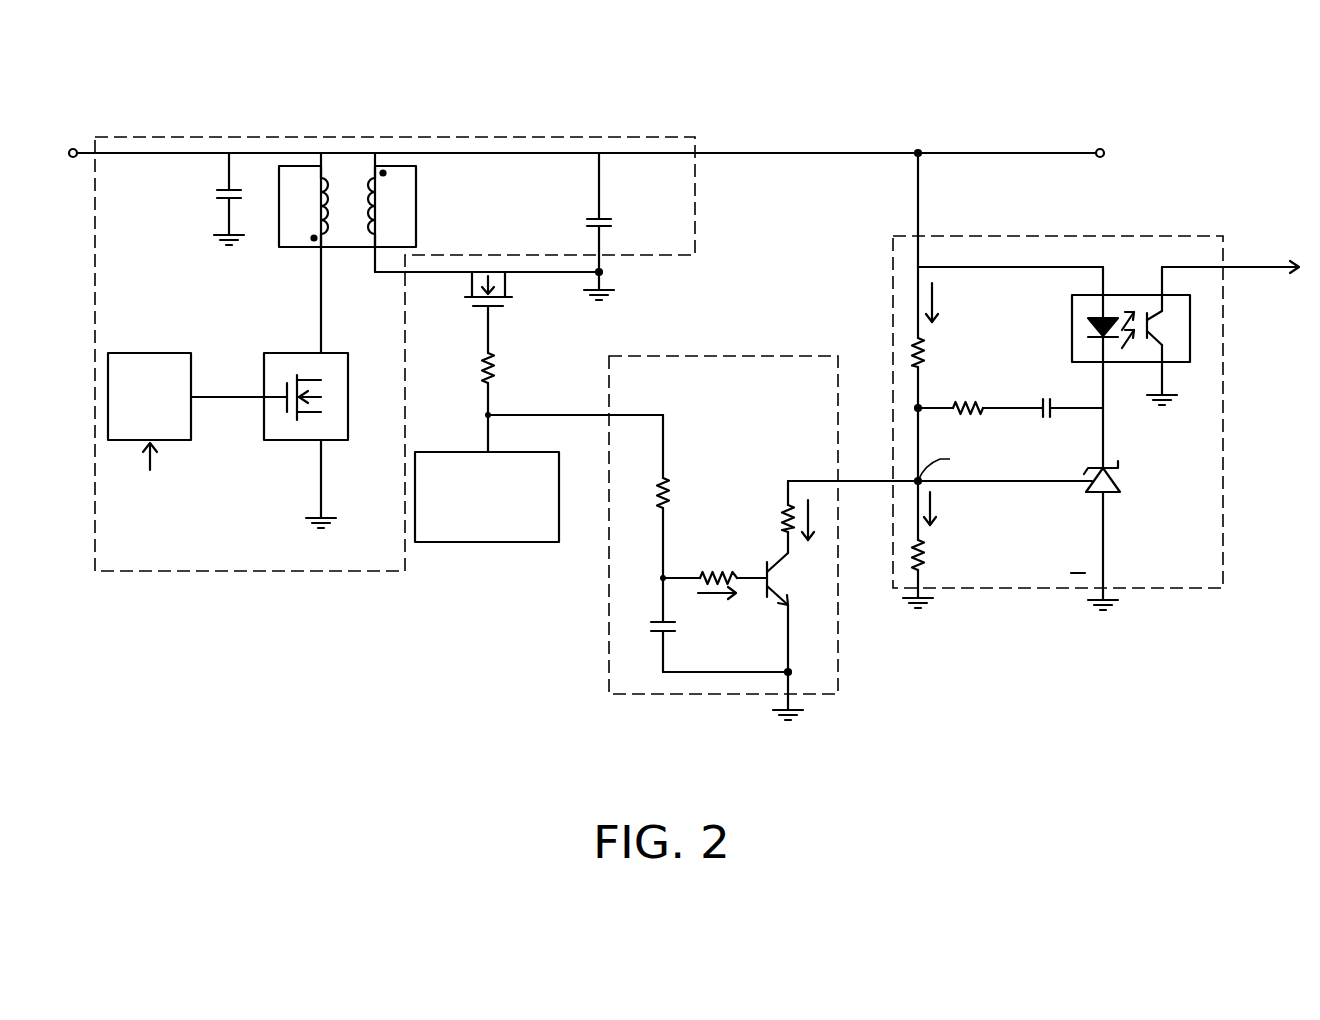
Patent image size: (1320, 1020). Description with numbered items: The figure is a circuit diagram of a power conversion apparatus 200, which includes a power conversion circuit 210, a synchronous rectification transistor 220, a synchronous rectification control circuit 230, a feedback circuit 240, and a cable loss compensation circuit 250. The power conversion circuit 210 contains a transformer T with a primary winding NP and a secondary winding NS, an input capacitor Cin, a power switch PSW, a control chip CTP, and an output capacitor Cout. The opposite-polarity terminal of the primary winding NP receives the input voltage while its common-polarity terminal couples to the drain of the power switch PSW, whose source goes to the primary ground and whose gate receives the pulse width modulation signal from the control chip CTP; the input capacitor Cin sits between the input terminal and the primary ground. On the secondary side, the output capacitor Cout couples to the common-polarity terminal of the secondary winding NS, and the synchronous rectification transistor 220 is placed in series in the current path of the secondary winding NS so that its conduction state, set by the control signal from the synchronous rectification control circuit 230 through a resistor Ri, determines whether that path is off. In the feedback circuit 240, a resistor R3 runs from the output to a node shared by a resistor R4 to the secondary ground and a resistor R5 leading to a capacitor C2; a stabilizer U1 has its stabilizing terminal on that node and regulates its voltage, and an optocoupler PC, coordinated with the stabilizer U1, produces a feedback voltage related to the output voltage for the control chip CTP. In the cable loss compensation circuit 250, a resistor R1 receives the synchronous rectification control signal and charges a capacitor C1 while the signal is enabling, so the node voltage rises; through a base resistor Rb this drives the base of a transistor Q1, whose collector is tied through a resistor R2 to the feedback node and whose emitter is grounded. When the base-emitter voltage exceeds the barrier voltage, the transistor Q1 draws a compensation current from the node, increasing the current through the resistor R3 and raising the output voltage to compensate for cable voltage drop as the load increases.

The power conversion apparatus 200 is at (689, 434).
The power conversion circuit 210 is at (600, 137).
The synchronous rectification transistor 220 is at (489, 241).
The synchronous rectification control circuit 230 is at (487, 545).
The feedback circuit 240 is at (1223, 450).
The cable loss compensation circuit 250 is at (838, 653).
The control chip CTP is at (144, 351).
The power switch PSW is at (350, 378).
The transformer T is at (347, 253).
The primary winding NP is at (303, 253).
The secondary winding NS is at (349, 285).
The input capacitor Cin is at (209, 199).
The output capacitor Cout is at (627, 226).
The resistor Ri is at (503, 402).
The resistor R1 is at (681, 518).
The resistor R2 is at (768, 507).
The resistor R3 is at (936, 439).
The resistor R4 is at (932, 574).
The resistor R5 is at (980, 392).
The base resistor Rb is at (715, 563).
The capacitor C1 is at (719, 643).
The capacitor C2 is at (1066, 393).
The transistor Q1 is at (790, 626).
The stabilizer U1 is at (1117, 535).
The optocoupler PC is at (1190, 328).